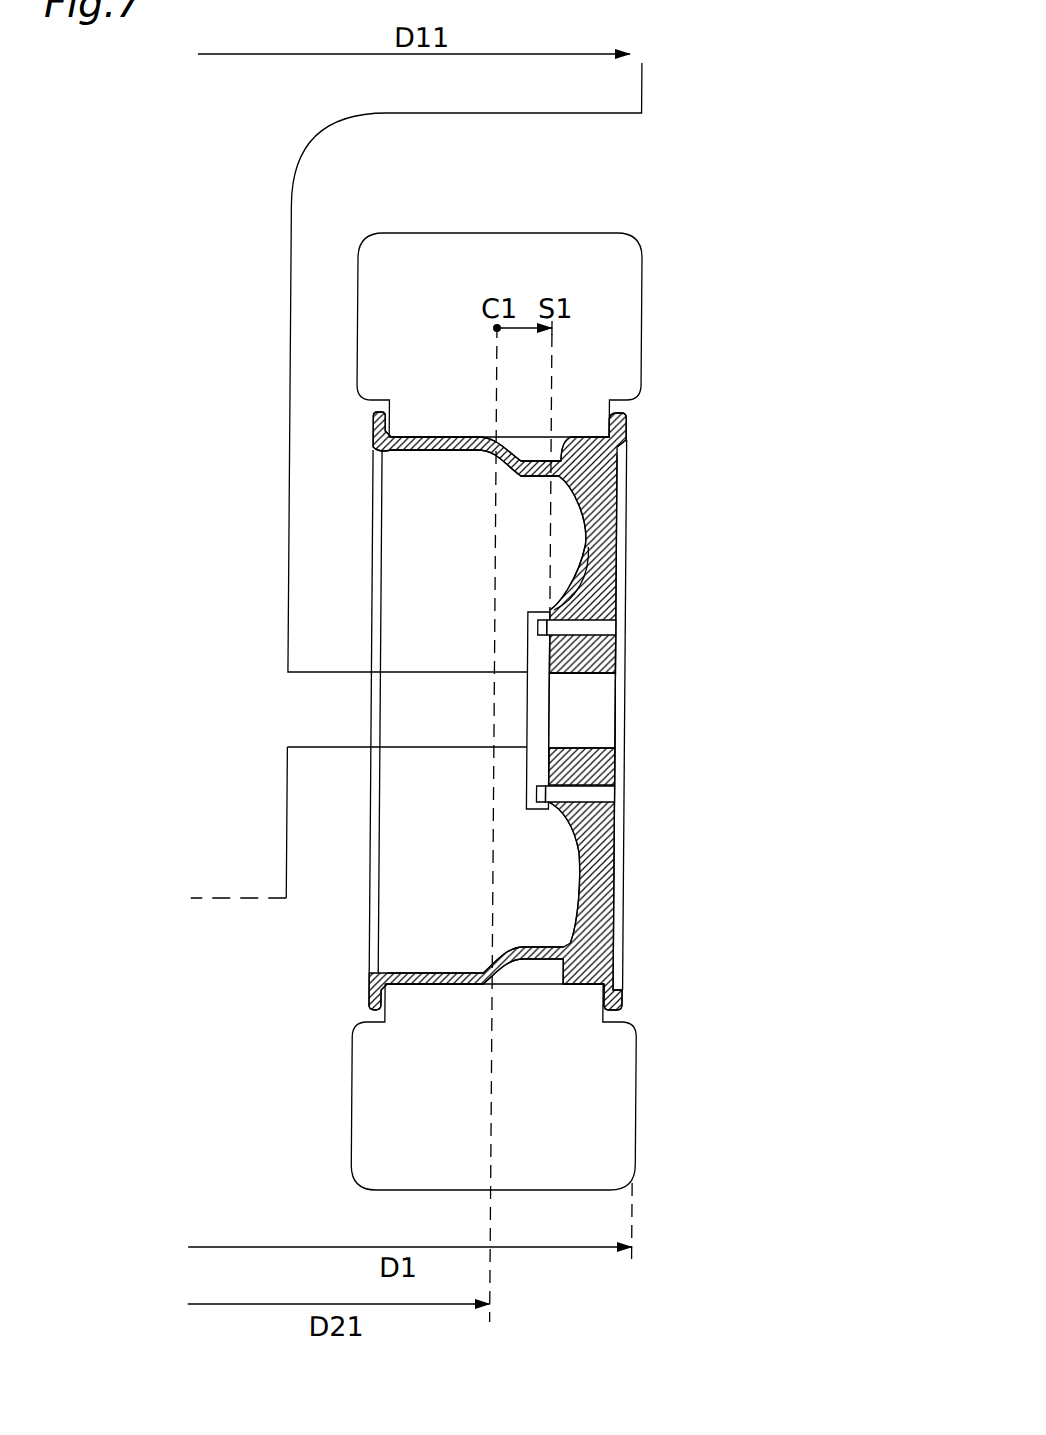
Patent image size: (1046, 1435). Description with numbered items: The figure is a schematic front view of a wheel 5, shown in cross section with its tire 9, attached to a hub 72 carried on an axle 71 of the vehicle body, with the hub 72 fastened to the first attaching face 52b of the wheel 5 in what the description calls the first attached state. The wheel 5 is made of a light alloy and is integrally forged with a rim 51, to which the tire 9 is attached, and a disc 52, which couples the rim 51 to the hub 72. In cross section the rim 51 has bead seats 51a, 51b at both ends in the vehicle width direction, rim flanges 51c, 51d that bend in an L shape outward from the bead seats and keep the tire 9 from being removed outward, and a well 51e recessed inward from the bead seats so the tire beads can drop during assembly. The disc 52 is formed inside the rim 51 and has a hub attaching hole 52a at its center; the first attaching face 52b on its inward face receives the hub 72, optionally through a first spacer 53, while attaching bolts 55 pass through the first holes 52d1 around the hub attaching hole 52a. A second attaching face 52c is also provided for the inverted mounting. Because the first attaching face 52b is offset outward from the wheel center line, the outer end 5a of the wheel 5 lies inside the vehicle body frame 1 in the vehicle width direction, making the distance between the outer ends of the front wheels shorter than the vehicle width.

The vehicle body frame 1 is at (640, 90).
The wheel 5 is at (678, 443).
The outer end of the wheel 5a is at (630, 977).
The tire 9 is at (630, 293).
The rim 51 is at (467, 438).
The bead seat 51a is at (592, 438).
The bead seat 51b is at (408, 438).
The rim flange 51c is at (624, 413).
The rim flange 51d is at (380, 411).
The well 51e is at (537, 459).
The disc 52 is at (607, 598).
The hub attaching hole 52a is at (587, 674).
The first attaching face 52b is at (607, 648).
The second attaching face 52c is at (615, 767).
The first holes 52d1 is at (613, 573).
The first spacer 53 is at (603, 527).
The attaching bolts 55 is at (607, 628).
The axle 71 is at (412, 672).
The hub 72 is at (535, 655).